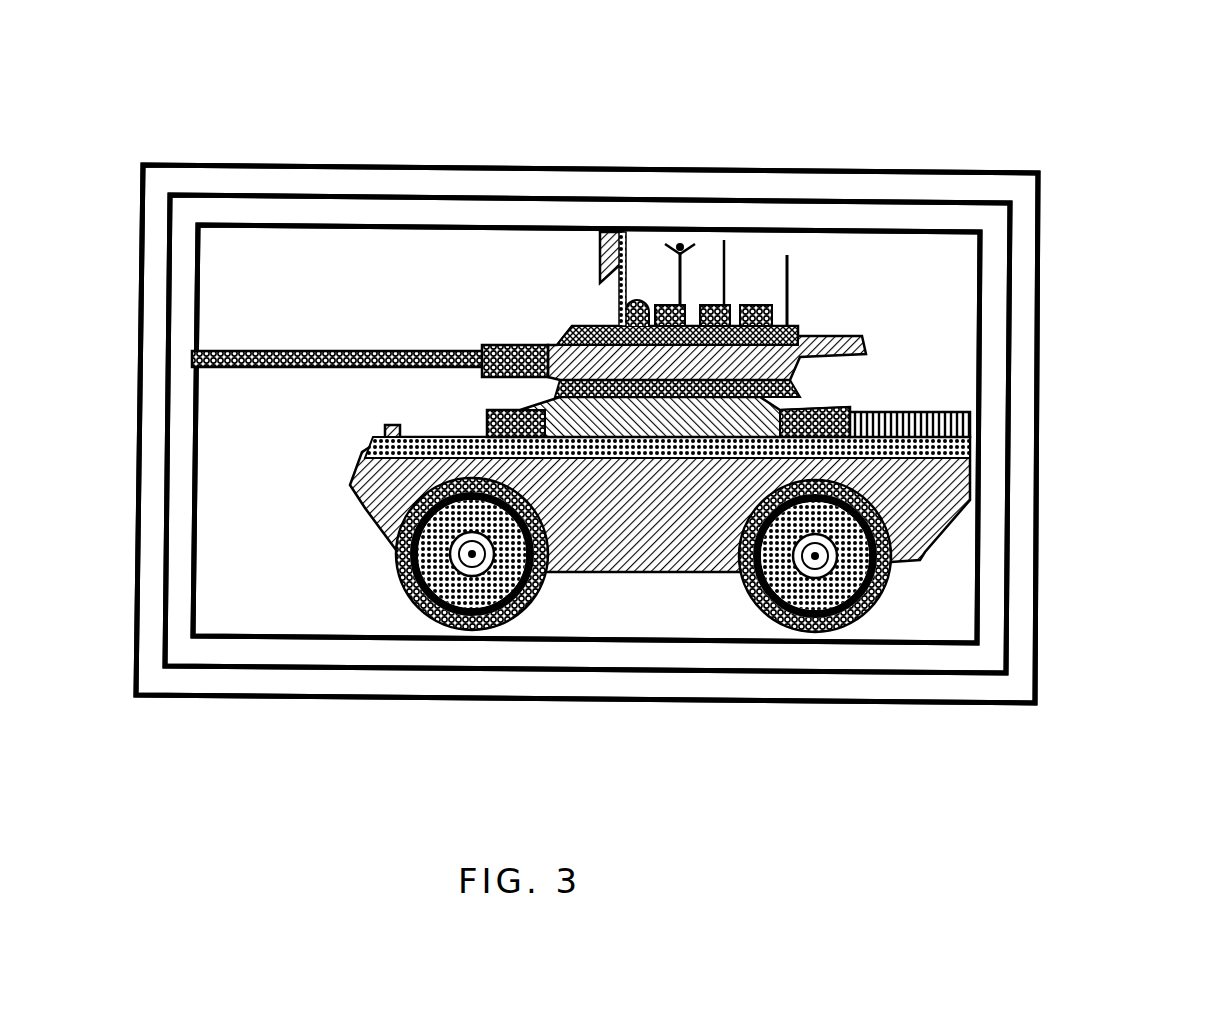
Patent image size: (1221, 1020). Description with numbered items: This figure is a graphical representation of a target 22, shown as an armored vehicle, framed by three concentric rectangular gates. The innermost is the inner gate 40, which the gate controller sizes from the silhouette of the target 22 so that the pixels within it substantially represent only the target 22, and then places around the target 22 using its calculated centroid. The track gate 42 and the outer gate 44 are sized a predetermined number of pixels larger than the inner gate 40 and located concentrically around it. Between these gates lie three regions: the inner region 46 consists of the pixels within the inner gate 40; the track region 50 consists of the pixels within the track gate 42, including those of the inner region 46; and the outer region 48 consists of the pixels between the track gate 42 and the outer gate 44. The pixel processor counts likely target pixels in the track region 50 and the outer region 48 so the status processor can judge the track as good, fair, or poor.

The target 22 is at (755, 303).
The inner gate 40 is at (992, 277).
The track gate 42 is at (1016, 366).
The outer gate 44 is at (1048, 453).
The inner region 46 is at (950, 605).
The outer region 48 is at (1012, 687).
The track region 50 is at (943, 212).